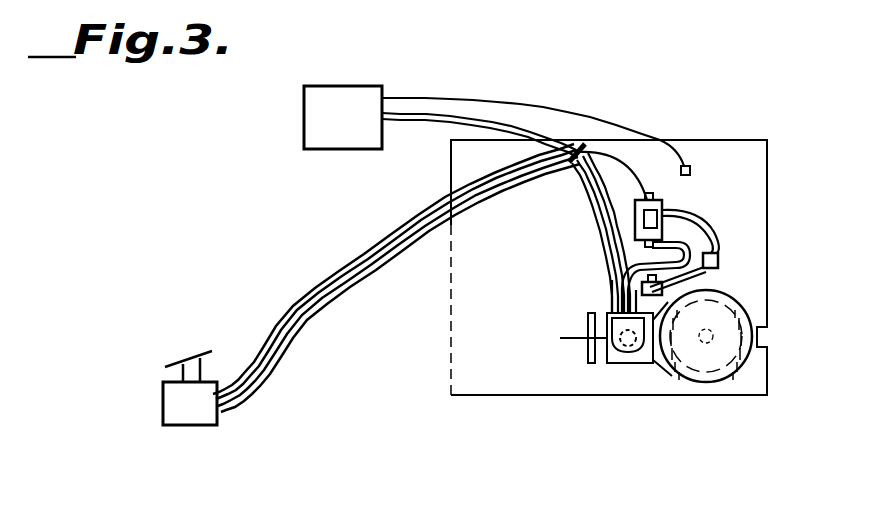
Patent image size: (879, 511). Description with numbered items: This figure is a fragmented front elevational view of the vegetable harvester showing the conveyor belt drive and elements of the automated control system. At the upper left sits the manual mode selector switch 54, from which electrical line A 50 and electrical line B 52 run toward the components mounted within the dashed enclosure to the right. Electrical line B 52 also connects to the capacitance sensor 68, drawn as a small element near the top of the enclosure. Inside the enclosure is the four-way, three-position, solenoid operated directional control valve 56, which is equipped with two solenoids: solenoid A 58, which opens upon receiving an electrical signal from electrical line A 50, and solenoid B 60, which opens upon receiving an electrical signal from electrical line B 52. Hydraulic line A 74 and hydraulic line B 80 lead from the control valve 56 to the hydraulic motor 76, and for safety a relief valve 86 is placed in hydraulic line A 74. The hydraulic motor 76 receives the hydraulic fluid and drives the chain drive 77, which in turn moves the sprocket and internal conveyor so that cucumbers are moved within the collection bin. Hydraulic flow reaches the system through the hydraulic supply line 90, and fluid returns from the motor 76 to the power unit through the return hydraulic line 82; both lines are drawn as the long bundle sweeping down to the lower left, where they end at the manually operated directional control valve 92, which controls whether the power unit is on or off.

The electrical line A 50 is at (425, 119).
The electrical line B 52 is at (400, 124).
The manual mode selector switch 54 is at (339, 96).
The directional control valve 56 is at (640, 284).
The solenoid A 58 is at (628, 243).
The solenoid B 60 is at (663, 205).
The capacitance sensor 68 is at (689, 167).
The hydraulic line A 74 is at (706, 225).
The hydraulic motor 76 is at (625, 364).
The chain drive 77 is at (698, 378).
The hydraulic line B 80 is at (626, 266).
The return hydraulic line 82 is at (332, 309).
The relief valve 86 is at (719, 260).
The hydraulic supply line 90 is at (313, 305).
The manually operated directional control valve 92 is at (192, 415).